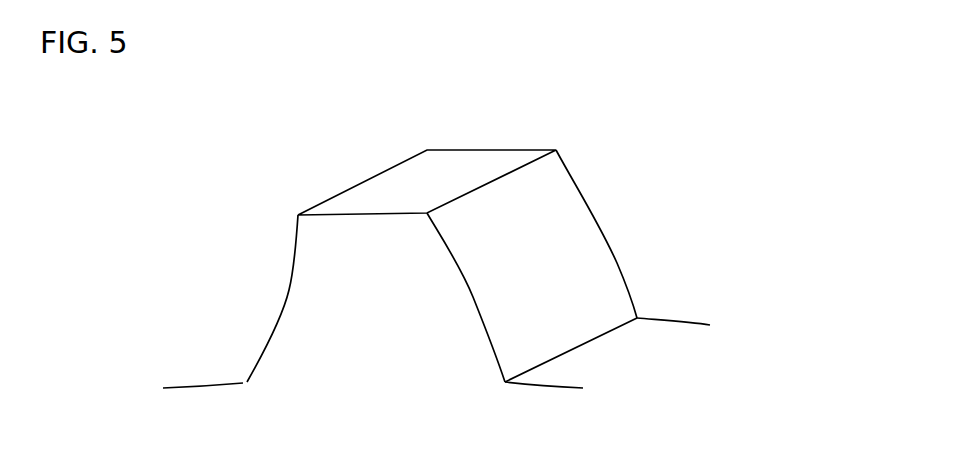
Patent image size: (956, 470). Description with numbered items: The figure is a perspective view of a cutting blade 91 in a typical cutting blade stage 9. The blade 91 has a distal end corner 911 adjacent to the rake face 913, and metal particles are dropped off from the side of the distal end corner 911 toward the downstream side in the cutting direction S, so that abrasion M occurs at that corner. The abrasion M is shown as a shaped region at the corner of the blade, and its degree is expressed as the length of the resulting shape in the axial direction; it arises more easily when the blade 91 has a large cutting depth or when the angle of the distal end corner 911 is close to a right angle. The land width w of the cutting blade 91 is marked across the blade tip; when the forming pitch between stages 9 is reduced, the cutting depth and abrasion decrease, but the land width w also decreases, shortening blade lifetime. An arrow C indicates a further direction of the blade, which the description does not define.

The cutting blade stage 9 is at (449, 251).
The cutting blade 91 is at (560, 233).
The distal end corner 911 is at (503, 177).
The rake face 913 is at (312, 306).
The abrasion M is at (304, 213).
The land width w is at (427, 200).
The circumferential direction C is at (428, 400).
The cutting direction S is at (750, 342).